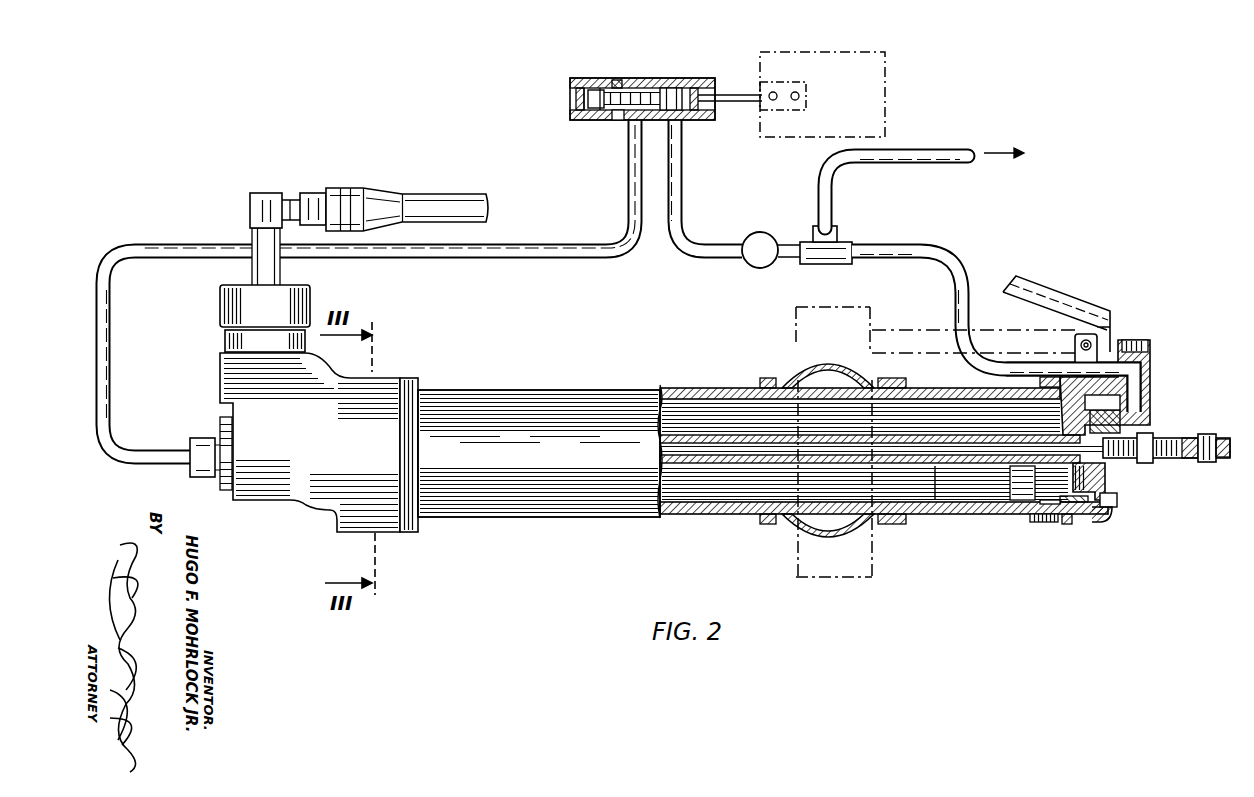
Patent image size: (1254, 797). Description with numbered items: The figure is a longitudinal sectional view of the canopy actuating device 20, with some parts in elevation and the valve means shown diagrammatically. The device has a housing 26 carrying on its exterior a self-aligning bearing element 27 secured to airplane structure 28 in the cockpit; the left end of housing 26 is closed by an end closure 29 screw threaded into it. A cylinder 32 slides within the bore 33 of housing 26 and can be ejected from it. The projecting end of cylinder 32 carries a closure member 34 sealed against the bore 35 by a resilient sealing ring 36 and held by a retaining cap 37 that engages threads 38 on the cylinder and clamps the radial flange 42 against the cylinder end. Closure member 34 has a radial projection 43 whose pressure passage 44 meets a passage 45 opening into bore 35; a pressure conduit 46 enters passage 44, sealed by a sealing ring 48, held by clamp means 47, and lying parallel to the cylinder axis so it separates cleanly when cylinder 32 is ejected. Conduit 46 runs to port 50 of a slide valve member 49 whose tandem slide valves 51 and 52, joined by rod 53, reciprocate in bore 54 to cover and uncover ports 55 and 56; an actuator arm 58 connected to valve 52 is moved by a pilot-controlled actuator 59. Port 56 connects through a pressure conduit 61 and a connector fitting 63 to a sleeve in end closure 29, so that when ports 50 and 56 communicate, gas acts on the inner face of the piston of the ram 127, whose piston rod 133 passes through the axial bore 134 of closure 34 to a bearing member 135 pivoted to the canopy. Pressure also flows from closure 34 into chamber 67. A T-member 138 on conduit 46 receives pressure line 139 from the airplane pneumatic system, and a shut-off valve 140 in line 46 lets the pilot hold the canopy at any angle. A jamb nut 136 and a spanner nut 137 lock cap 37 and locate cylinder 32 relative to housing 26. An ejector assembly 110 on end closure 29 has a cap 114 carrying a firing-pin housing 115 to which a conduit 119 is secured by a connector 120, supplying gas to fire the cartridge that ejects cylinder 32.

The actuating device 20 is at (492, 392).
The housing 26 is at (565, 392).
The self-aligning bearing element 27 is at (790, 540).
The airplane structure 28 is at (874, 552).
The end closure 29 is at (312, 512).
The cylinder 32 is at (705, 516).
The bore 33 is at (680, 386).
The closure member 34 is at (1108, 478).
The bore 35 is at (742, 395).
The resilient sealing ring 36 is at (1075, 515).
The retaining cap 37 is at (1118, 500).
The threads 38 is at (1045, 523).
The flange 42 is at (1110, 517).
The projection 43 is at (1168, 385).
The pressure passage 44 is at (1150, 382).
The passage 45 is at (1142, 418).
The pressure conduit 46 is at (960, 256).
The clamp means 47 is at (1086, 335).
The sealing ring 48 is at (1130, 342).
The slide valve member 49 is at (705, 66).
The valve port 50 is at (688, 124).
The slide valve 51 is at (594, 88).
The slide valve 52 is at (671, 88).
The rod 53 is at (646, 90).
The bore 54 is at (695, 88).
The port 55 is at (617, 80).
The port 56 is at (618, 122).
The actuator arm 58 is at (740, 94).
The actuator 59 is at (806, 52).
The pressure conduit 61 is at (612, 216).
The connector fitting 63 is at (200, 438).
The chamber 67 is at (932, 480).
The ejector assembly 110 is at (216, 337).
The cap 114 is at (222, 300).
The housing 115 is at (255, 205).
The conduit 119 is at (450, 193).
The connector 120 is at (314, 192).
The ram 127 is at (985, 462).
The piston rod 133 is at (678, 516).
The axial bore 134 is at (1020, 470).
The bearing member 135 is at (1200, 436).
The jamb nut 136 is at (1067, 525).
The spanner nut 137 is at (1040, 518).
The T-member 138 is at (832, 244).
The pressure line 139 is at (938, 150).
The shut-off valve 140 is at (758, 232).